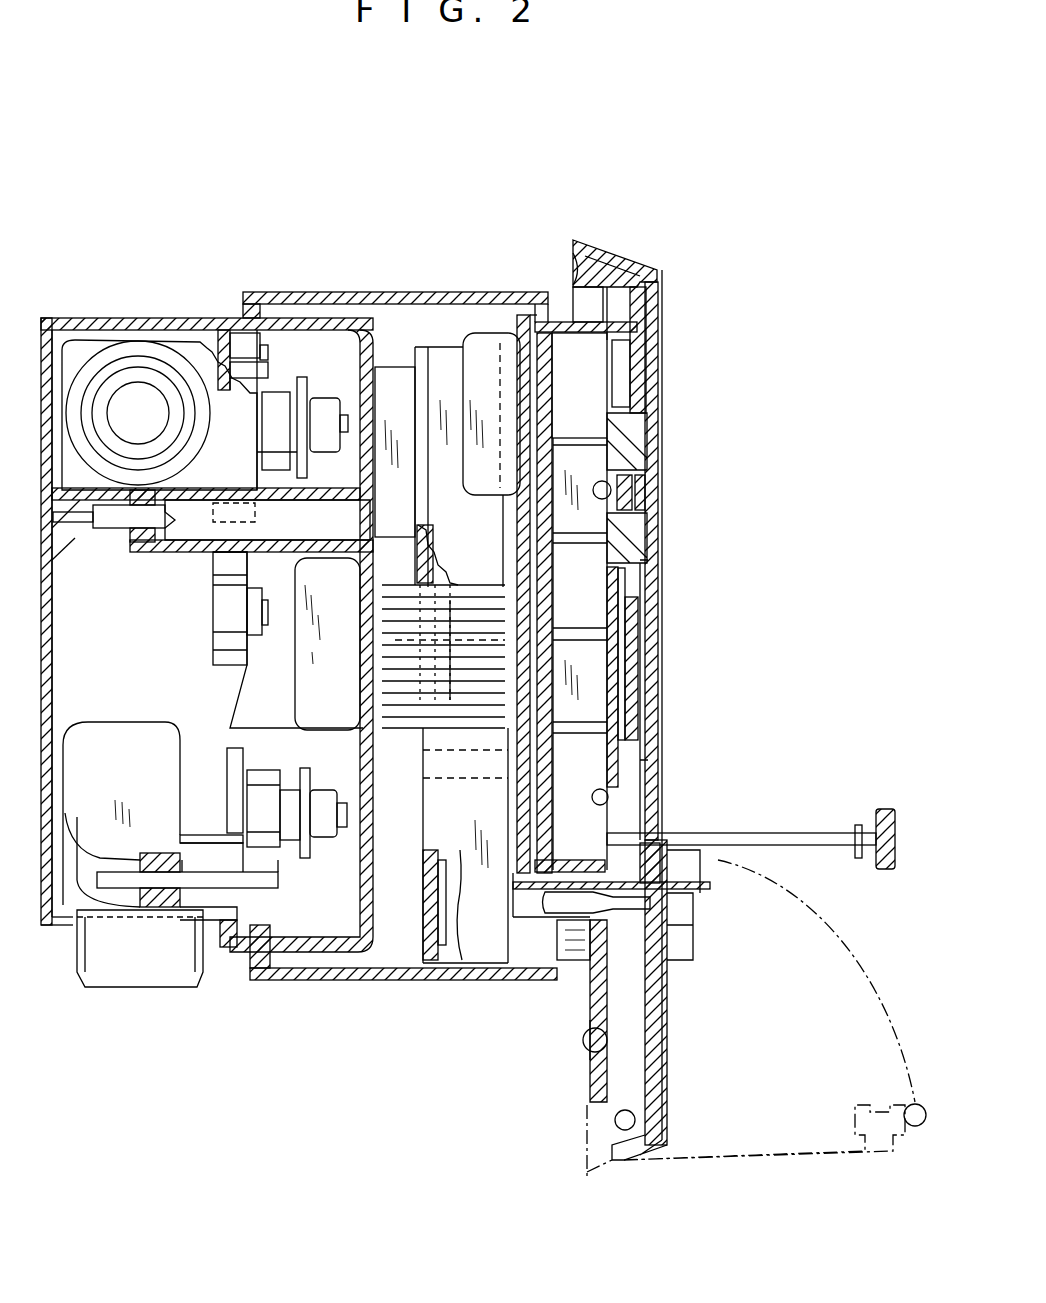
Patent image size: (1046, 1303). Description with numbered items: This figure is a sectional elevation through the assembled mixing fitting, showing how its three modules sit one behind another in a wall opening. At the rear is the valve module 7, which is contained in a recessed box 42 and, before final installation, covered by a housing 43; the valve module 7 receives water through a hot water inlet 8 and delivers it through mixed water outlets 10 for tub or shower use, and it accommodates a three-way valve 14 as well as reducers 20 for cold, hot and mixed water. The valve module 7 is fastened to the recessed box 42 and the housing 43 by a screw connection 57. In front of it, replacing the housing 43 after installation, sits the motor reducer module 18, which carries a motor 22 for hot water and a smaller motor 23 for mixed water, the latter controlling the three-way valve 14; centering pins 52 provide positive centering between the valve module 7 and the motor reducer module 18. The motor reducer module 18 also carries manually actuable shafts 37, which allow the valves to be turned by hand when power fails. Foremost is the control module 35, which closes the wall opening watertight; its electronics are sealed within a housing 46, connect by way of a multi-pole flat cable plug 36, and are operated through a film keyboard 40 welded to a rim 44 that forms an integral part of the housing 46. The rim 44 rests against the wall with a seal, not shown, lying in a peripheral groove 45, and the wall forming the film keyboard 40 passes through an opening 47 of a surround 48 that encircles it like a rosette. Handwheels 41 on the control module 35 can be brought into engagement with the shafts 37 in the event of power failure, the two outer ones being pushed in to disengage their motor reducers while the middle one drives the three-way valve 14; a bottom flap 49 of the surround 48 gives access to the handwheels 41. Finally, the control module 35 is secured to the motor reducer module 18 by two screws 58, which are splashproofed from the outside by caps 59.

The valve module 7 is at (147, 657).
The hot water inlet 8 is at (128, 958).
The mixed water outlets 10 is at (137, 390).
The three-way valve 14 is at (277, 422).
The motor reducer module 18 is at (478, 942).
The reducers 20 is at (145, 783).
The motor for hot water 22 is at (387, 570).
The motor for mixed water 23 is at (393, 378).
The control module 35 is at (571, 350).
The multi-pole flat cable plug 36 is at (403, 705).
The manually actuable shafts 37 is at (575, 902).
The film keyboard 40 is at (640, 625).
The handwheels 41 is at (685, 950).
The recessed box 42 is at (206, 318).
The housing 43 is at (438, 292).
The rim 44 is at (598, 265).
The peripheral groove 45 is at (595, 1040).
The housing 46 is at (517, 553).
The opening 47 is at (648, 650).
The surround 48 is at (650, 270).
The bottom flap 49 is at (670, 1052).
The centering pins 52 is at (210, 878).
The screw connection 57 is at (123, 520).
The screws 58 is at (790, 838).
The caps 59 is at (885, 808).